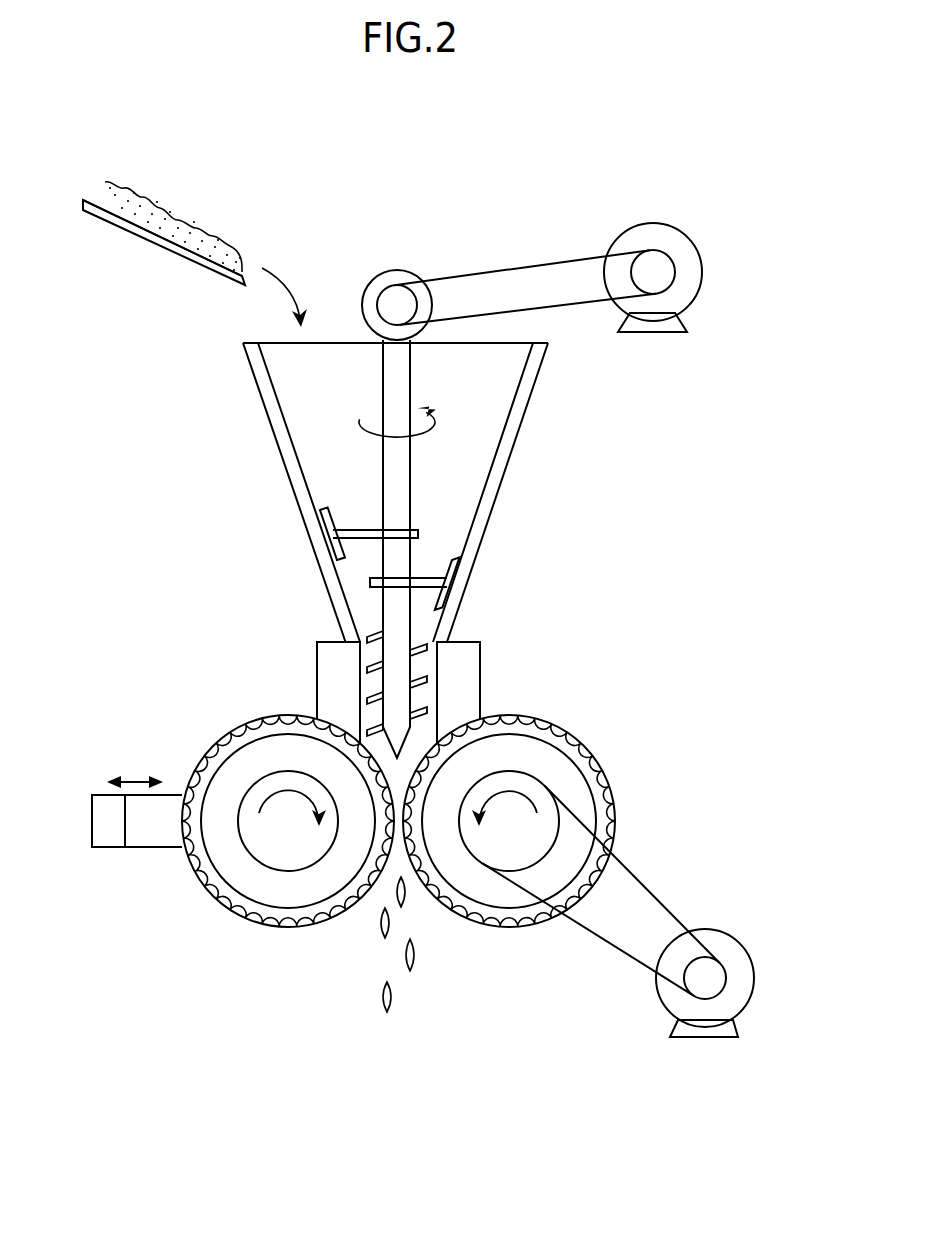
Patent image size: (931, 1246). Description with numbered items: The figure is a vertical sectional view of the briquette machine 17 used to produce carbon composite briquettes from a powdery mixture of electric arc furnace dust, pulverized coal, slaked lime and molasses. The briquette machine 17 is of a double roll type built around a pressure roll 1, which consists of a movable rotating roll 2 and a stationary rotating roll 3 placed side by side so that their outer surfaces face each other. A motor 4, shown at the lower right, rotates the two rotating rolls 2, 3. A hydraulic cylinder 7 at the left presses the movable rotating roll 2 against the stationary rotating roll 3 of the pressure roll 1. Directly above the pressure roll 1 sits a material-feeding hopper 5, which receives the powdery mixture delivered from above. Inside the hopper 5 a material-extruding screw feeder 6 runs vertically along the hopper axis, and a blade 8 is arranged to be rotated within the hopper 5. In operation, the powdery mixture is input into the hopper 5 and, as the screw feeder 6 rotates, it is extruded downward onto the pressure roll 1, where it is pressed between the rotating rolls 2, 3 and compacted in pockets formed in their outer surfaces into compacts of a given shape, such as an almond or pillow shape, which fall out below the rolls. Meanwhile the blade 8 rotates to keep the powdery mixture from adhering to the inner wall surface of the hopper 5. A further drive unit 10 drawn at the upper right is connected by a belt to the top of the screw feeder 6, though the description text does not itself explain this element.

The pressure roll 1 is at (642, 806).
The movable rotating roll 2 is at (220, 740).
The stationary rotating roll 3 is at (563, 728).
The motor 4 is at (748, 1002).
The material-feeding hopper 5 is at (505, 480).
The material-extruding screw feeder 6 is at (367, 668).
The hydraulic cylinder 7 is at (103, 847).
The blade 8 is at (343, 513).
The screw drive motor 10 is at (653, 222).
The briquette machine 17 is at (696, 497).